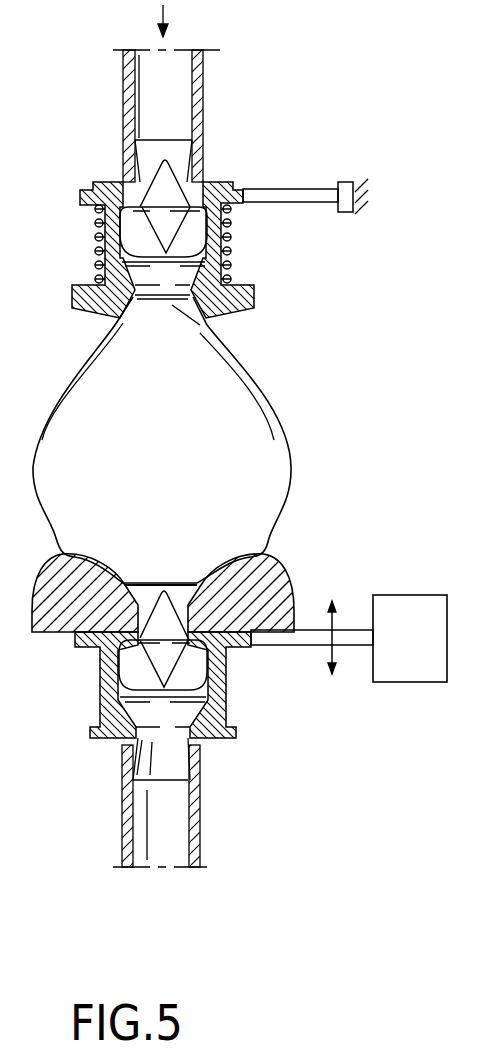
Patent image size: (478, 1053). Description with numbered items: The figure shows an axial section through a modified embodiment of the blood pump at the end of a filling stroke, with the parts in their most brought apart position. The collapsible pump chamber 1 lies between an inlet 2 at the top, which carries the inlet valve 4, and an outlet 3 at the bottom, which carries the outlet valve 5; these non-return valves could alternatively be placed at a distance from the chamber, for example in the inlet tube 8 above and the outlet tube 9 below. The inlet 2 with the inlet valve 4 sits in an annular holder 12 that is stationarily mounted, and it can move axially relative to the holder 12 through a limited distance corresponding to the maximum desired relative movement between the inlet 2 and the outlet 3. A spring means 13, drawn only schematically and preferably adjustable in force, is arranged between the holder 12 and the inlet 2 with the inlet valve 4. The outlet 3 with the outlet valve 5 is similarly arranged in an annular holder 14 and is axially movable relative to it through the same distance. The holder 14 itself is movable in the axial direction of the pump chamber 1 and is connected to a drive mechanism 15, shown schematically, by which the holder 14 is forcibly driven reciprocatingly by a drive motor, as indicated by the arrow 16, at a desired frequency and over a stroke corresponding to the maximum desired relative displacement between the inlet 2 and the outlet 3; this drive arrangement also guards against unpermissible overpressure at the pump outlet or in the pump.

The pump chamber 1 is at (265, 388).
The inlet 2 is at (205, 323).
The outlet 3 is at (147, 577).
The inlet valve 4 is at (203, 182).
The outlet valve 5 is at (177, 668).
The inlet tube 8 is at (203, 110).
The outlet tube 9 is at (198, 805).
The annular holder 12 is at (240, 198).
The spring means 13 is at (233, 250).
The annular holder 14 is at (243, 645).
The drive mechanism 15 is at (392, 600).
The arrow 16 is at (327, 617).